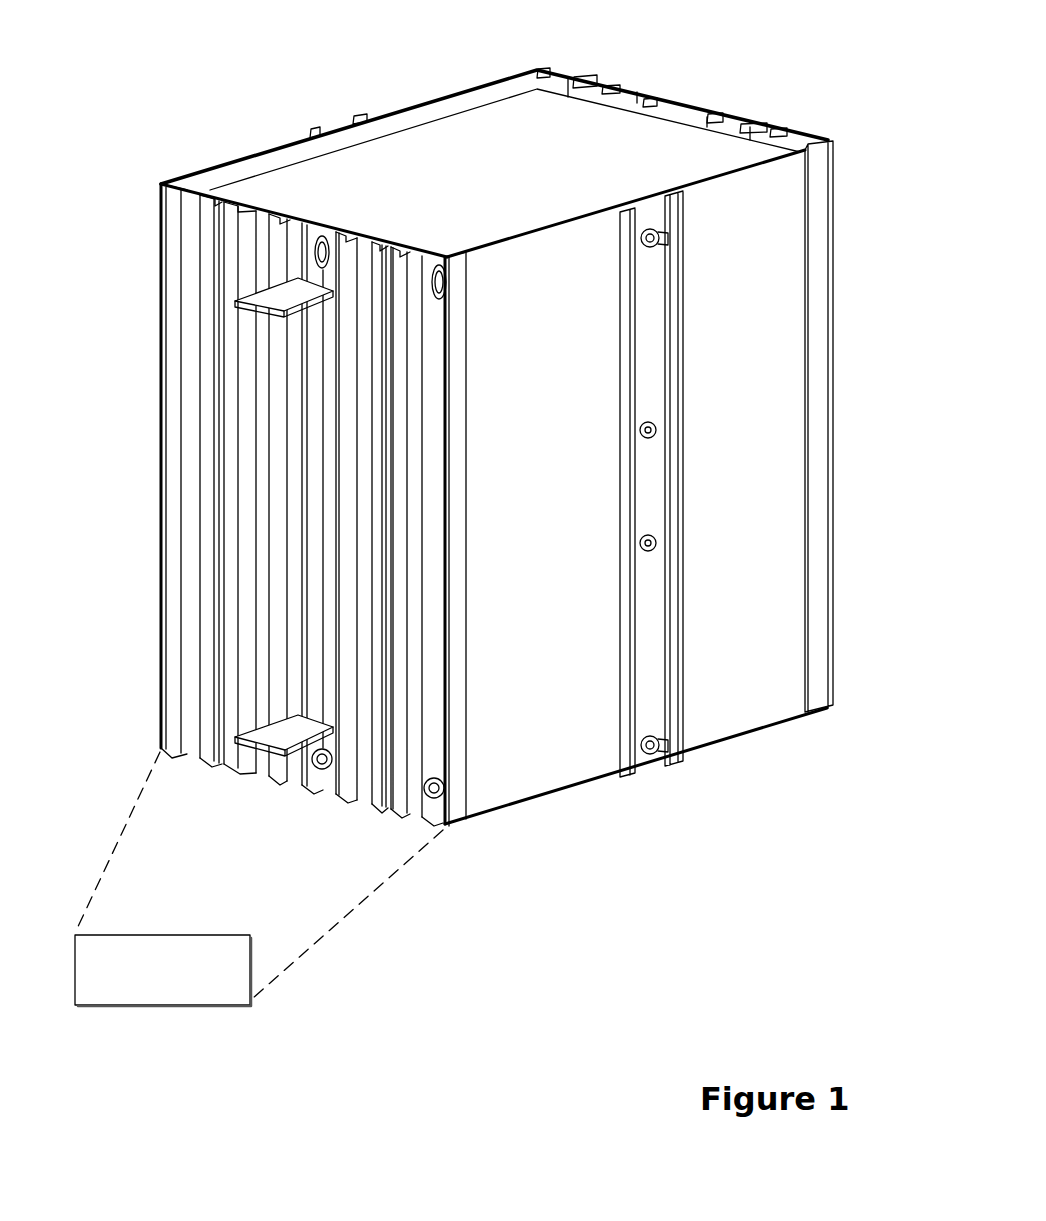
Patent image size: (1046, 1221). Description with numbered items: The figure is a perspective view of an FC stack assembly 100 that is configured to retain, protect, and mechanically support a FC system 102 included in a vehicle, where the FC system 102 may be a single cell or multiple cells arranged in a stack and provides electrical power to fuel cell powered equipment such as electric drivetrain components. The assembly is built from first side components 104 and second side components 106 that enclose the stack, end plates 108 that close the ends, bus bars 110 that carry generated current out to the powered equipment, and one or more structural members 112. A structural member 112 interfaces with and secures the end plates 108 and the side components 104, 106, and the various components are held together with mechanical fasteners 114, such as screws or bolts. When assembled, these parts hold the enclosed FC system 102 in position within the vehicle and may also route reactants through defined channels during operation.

The FC stack assembly 100 is at (228, 88).
The FC system 102 is at (175, 979).
The first side components 104 is at (645, 98).
The second side components 106 is at (780, 412).
The end plates 108 is at (432, 150).
The bus bars 110 is at (287, 298).
The structural members 112 is at (687, 560).
The mechanical fasteners 114 is at (318, 772).